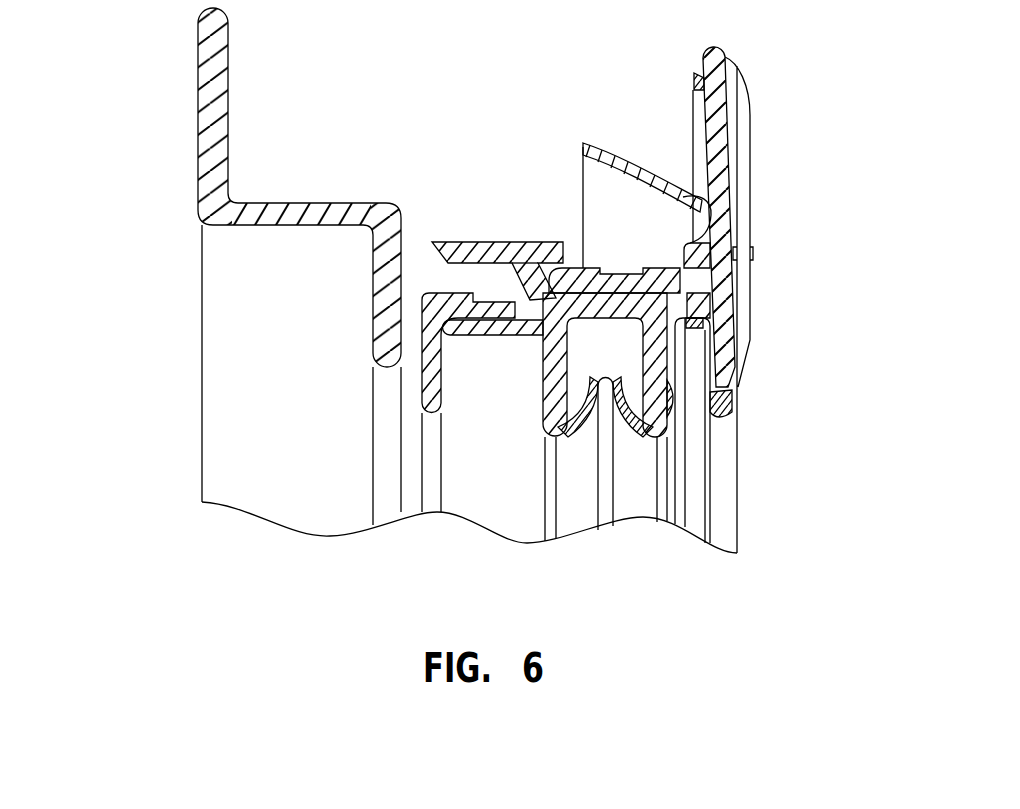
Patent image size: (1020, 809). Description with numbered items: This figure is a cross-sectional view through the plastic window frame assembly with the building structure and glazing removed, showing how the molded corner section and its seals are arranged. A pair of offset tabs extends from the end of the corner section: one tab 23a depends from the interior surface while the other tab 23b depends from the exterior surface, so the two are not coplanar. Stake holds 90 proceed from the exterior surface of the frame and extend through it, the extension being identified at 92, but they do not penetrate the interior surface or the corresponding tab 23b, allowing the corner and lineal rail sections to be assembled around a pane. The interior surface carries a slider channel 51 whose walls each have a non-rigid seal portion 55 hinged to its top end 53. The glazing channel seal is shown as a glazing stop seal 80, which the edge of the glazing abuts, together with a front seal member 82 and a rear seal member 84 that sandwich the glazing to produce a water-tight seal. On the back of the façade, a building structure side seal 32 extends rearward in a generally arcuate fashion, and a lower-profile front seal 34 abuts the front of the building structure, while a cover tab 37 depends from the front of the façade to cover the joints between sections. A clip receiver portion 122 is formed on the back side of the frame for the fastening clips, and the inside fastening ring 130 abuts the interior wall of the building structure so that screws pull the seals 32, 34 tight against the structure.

The inside fastening ring 130 is at (197, 82).
The clip receiver portion 122 is at (436, 241).
The stake hold extension through the frame 92 is at (497, 240).
The stake hold 90 is at (470, 206).
The exterior-surface tab 23b is at (497, 333).
The interior-surface tab 23a is at (712, 280).
The slider channel 51 is at (607, 348).
The non-rigid seal portion 55 is at (614, 448).
The building structure side seal 32 is at (584, 143).
The front seal 34 is at (693, 83).
The cover tab 37 is at (751, 198).
The glazing stop seal 80 is at (706, 295).
The front seal member 82 is at (734, 406).
The rear seal member 84 is at (674, 405).
The top end of slider channel wall 53 is at (663, 490).